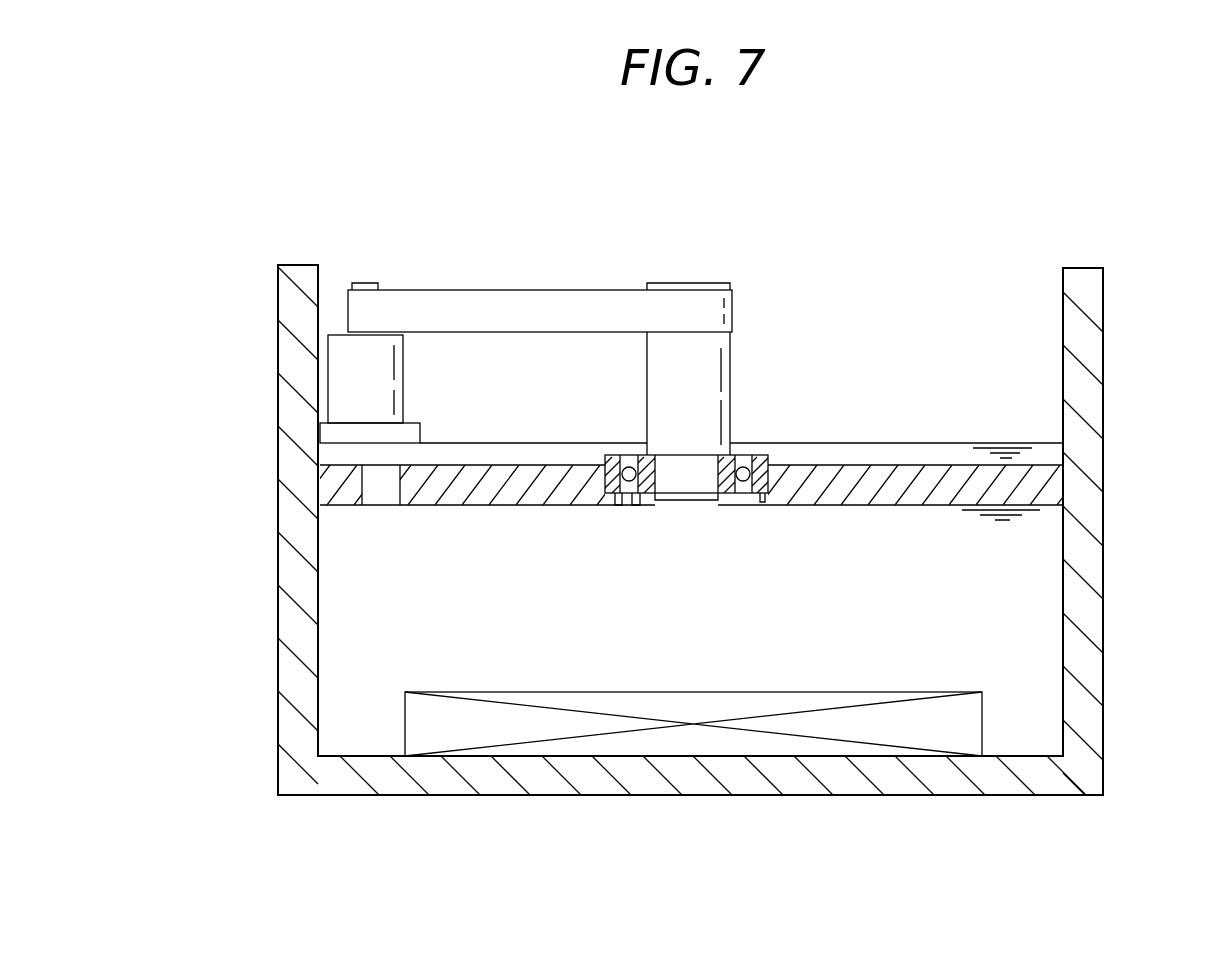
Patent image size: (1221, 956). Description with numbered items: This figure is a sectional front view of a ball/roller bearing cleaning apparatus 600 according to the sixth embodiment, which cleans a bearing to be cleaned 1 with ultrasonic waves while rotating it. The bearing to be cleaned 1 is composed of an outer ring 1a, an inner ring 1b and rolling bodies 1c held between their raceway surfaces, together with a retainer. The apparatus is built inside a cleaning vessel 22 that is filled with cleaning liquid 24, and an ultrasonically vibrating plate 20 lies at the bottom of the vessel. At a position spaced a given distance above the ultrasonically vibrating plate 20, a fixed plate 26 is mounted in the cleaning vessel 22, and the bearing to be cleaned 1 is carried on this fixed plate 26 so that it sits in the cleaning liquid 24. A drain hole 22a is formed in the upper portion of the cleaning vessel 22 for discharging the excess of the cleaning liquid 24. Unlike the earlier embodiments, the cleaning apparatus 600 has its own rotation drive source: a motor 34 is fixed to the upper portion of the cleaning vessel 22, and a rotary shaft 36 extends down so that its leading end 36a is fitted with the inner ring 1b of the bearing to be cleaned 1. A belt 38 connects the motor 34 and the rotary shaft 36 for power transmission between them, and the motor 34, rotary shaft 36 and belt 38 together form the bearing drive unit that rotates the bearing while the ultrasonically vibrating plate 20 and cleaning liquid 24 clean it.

The ball/roller bearing cleaning apparatus 600 is at (895, 210).
The cleaning vessel 22 is at (1075, 268).
The drain hole 22a is at (378, 498).
The cleaning liquid 24 is at (857, 452).
The fixed plate 26 is at (1060, 484).
The motor 34 is at (340, 385).
The rotary shaft 36 is at (657, 383).
The leading end 36a is at (697, 497).
The belt 38 is at (487, 290).
The bearing to be cleaned 1 is at (760, 446).
The outer ring 1a is at (607, 482).
The inner ring 1b is at (644, 496).
The rolling bodies 1c is at (628, 492).
The ultrasonically vibrating plate 20 is at (982, 722).